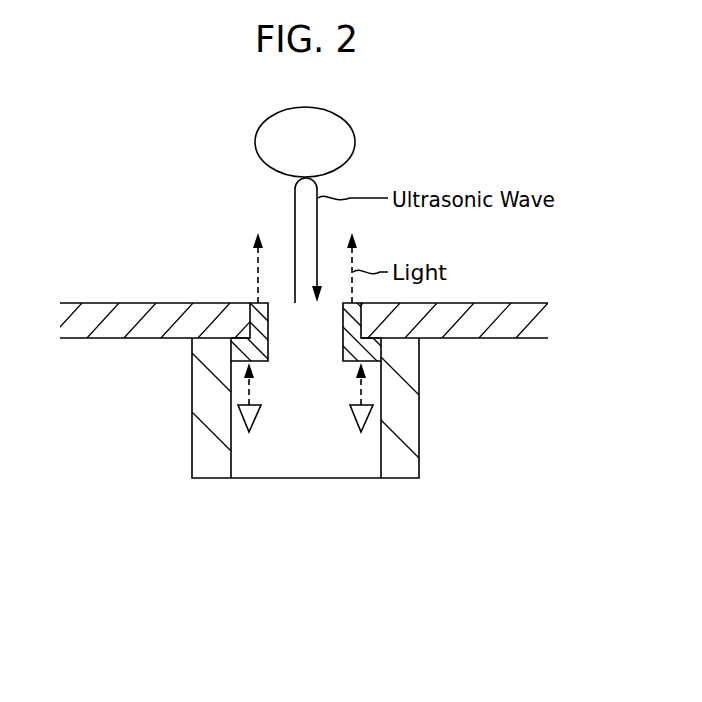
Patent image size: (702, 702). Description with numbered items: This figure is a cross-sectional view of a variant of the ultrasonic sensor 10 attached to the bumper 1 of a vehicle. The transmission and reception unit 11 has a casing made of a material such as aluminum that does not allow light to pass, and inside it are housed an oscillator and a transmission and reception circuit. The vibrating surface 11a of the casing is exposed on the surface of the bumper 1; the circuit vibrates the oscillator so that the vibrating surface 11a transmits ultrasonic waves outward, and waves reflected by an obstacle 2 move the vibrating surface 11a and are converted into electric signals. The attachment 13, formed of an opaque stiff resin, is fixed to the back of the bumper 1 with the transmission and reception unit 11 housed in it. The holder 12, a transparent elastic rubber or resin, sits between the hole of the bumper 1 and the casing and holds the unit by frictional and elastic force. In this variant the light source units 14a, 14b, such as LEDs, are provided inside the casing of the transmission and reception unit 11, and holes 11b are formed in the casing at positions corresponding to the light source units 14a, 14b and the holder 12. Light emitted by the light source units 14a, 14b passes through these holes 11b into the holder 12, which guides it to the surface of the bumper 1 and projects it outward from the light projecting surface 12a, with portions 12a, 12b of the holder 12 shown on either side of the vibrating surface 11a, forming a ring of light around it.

The bumper 1 is at (86, 303).
The obstacle 2 is at (356, 140).
The ultrasonic sensor 10 is at (196, 201).
The transmission and reception unit 11 is at (290, 479).
The vibrating surface 11a is at (292, 301).
The holes 11b is at (381, 361).
The holder 12 is at (382, 341).
The light projecting surface 12a is at (256, 300).
The second light transmitting portion 12b is at (360, 334).
The attachment 13 is at (405, 465).
The light source unit 14a is at (231, 413).
The light source unit 14b is at (381, 420).